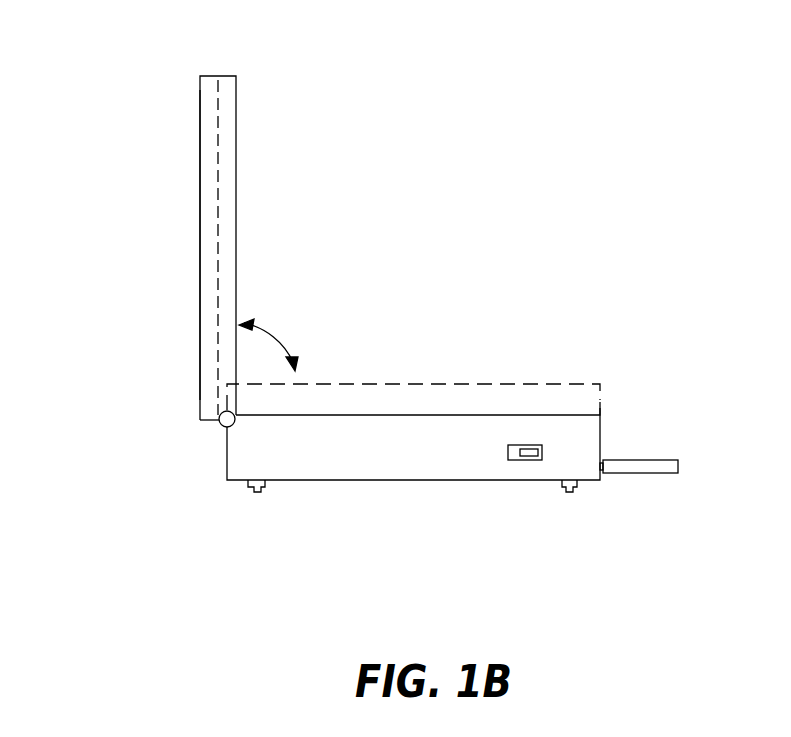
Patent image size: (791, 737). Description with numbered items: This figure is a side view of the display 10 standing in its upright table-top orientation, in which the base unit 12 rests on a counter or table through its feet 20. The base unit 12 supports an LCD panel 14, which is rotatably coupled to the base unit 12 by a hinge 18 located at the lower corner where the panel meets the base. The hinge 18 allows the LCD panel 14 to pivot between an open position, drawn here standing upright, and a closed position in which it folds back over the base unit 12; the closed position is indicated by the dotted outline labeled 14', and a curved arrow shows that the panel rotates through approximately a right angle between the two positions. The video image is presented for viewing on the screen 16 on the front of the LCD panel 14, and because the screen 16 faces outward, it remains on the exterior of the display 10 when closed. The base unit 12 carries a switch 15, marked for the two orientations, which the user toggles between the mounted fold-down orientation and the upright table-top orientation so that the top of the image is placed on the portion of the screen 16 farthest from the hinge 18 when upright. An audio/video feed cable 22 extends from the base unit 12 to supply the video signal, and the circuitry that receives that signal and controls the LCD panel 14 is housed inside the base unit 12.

The display 10 is at (147, 502).
The base unit 12 is at (601, 447).
The LCD panel 14 is at (211, 213).
The LCD panel in closed position 14' is at (413, 367).
The switch 15 is at (526, 461).
The screen 16 is at (200, 105).
The hinge 18 is at (220, 426).
The feet 20 is at (253, 492).
The audio/video feed cable 22 is at (643, 473).